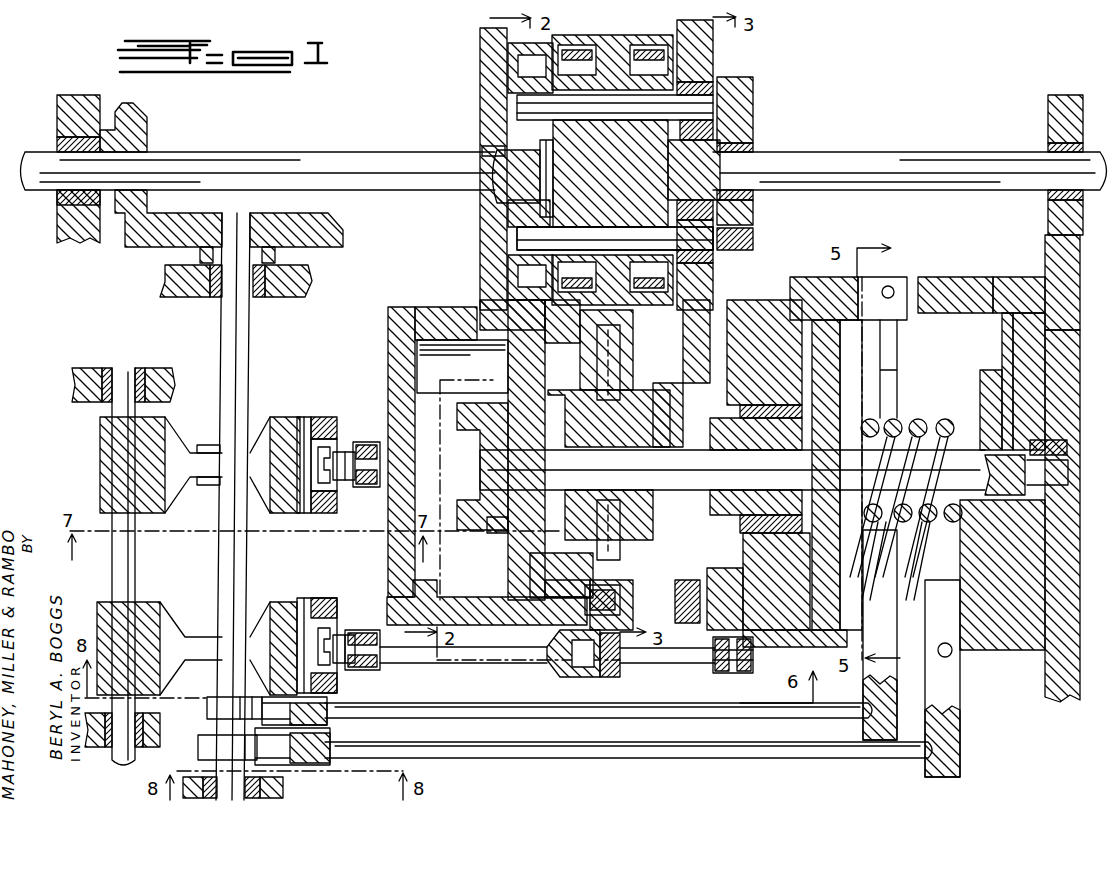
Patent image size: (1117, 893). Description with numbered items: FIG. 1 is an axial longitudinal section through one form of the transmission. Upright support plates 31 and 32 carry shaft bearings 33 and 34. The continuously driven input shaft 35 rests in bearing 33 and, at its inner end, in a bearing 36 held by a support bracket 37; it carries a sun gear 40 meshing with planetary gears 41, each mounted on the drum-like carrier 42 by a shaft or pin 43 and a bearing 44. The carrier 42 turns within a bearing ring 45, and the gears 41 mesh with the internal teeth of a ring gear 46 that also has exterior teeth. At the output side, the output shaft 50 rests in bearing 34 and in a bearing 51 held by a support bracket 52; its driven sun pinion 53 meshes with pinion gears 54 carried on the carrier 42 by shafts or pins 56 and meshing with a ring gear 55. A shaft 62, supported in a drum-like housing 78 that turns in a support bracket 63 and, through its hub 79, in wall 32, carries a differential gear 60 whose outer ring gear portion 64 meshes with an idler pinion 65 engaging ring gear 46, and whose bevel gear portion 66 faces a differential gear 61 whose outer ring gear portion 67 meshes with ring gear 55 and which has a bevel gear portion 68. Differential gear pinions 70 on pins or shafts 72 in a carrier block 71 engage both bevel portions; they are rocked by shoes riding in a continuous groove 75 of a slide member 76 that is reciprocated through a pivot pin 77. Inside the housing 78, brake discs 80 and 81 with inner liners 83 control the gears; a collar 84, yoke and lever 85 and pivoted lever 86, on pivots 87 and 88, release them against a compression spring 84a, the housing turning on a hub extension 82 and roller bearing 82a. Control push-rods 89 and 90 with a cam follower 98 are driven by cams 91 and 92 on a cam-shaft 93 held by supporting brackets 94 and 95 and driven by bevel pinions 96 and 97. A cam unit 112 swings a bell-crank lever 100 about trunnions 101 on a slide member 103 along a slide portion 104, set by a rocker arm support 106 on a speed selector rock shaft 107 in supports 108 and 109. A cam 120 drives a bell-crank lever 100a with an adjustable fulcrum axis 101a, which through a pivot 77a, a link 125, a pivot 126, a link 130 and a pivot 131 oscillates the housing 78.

The support plate 31 is at (62, 242).
The support plate 32 is at (1090, 325).
The shaft bearing 33 is at (57, 140).
The shaft bearing 34 is at (1083, 137).
The input shaft 35 is at (298, 160).
The bearing 36 is at (482, 148).
The support bracket 37 is at (482, 120).
The sun gear 40 is at (527, 180).
The planetary gears 41 is at (517, 245).
The carrier 42 is at (660, 157).
The shaft or pin 43 is at (530, 238).
The bearing 44 is at (510, 222).
The bearing ring 45 is at (605, 40).
The ring gear 46 is at (508, 55).
The output shaft 50 is at (940, 152).
The bearing 51 is at (750, 140).
The support bracket 52 is at (747, 110).
The driven sun pinion 53 is at (713, 228).
The pinion gears 54 is at (713, 258).
The ring gear 55 is at (713, 297).
The shafts or pins 56 is at (753, 245).
The differential gear 60 is at (508, 565).
The differential gear 61 is at (683, 332).
The shaft 62 is at (903, 478).
The support bracket 63 is at (460, 427).
The outer ring gear portion 64 is at (513, 600).
The idler pinion 65 is at (490, 300).
The bevel gear portion 66 is at (555, 365).
The outer ring gear portion 67 is at (688, 623).
The bevel gear portion 68 is at (667, 382).
The differential gear pinions 70 is at (570, 580).
The carrier block 71 is at (718, 500).
The pin or shaft 72 is at (606, 442).
The continuous groove 75 is at (622, 600).
The slide member 76 is at (527, 625).
The pivot pin 77 is at (370, 442).
The pivot 77a is at (365, 630).
The drum-like housing 78 is at (965, 280).
The hub 79 is at (1030, 440).
The brake disc 80 is at (845, 320).
The brake disc 81 is at (1003, 278).
The hub extension 82 is at (787, 440).
The roller bearing 82a is at (735, 433).
The inner liner 83 is at (1010, 348).
The collar 84 is at (895, 420).
The compression spring 84a is at (905, 428).
The yoke and lever 85 is at (890, 580).
The pivoted lever 86 is at (948, 697).
The pivot 87 is at (895, 290).
The pivot 88 is at (952, 656).
The control push-rod 89 is at (760, 735).
The control push-rod 90 is at (828, 765).
The cam 91 is at (215, 700).
The cam 92 is at (205, 738).
The cam-shaft 93 is at (252, 370).
The supporting bracket 94 is at (283, 790).
The supporting bracket 95 is at (298, 292).
The bevel pinion 96 is at (148, 130).
The bevel pinion 97 is at (320, 238).
The cam follower 98 is at (340, 733).
The bell-crank lever 100 is at (340, 480).
The bell-crank lever 100a is at (345, 663).
The trunnions 101 is at (335, 540).
The adjustable fulcrum axis 101a is at (312, 600).
The slide member 103 is at (305, 417).
The slide portion 104 is at (328, 520).
The rocker arm support 106 is at (177, 478).
The speed selector rock shaft 107 is at (135, 547).
The support 108 is at (158, 368).
The support 109 is at (95, 748).
The cam unit 112 is at (215, 445).
The cam 120 is at (215, 637).
The link 125 is at (433, 655).
The pivot 126 is at (600, 675).
The link 130 is at (732, 674).
The pivot 131 is at (753, 655).